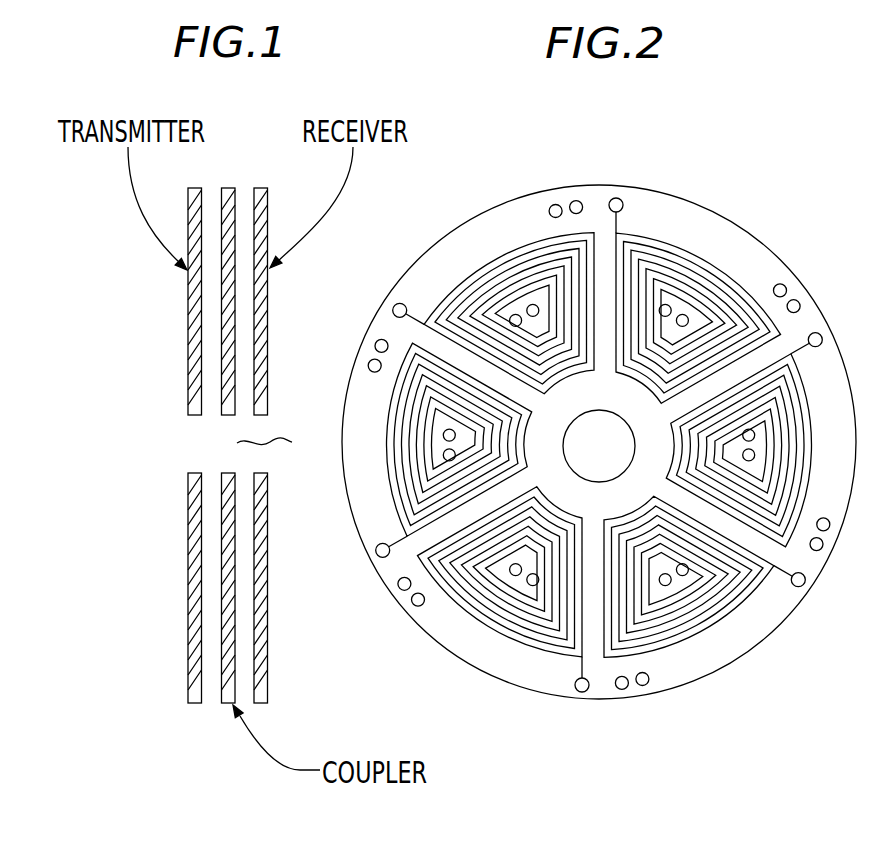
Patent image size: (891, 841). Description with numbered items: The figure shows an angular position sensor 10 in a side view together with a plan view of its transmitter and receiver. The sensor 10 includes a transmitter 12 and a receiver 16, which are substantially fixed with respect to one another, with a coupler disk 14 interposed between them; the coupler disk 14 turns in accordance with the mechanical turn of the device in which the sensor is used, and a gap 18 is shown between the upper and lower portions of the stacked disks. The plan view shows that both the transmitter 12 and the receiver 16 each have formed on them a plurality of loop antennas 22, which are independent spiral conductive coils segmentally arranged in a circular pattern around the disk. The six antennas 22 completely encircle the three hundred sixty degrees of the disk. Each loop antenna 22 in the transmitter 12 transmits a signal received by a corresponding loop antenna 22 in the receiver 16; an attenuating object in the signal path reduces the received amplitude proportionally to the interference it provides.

In FIG. 1, the angular position sensor 10 is at (296, 106).
In FIG. 1, the transmitter 12 is at (195, 188).
In FIG. 1, the coupler disk 14 is at (228, 188).
In FIG. 1, the receiver 16 is at (267, 188).
In FIG. 1, the gap 18 is at (281, 442).
In FIG. 2, the loop antenna 22 is at (688, 262).